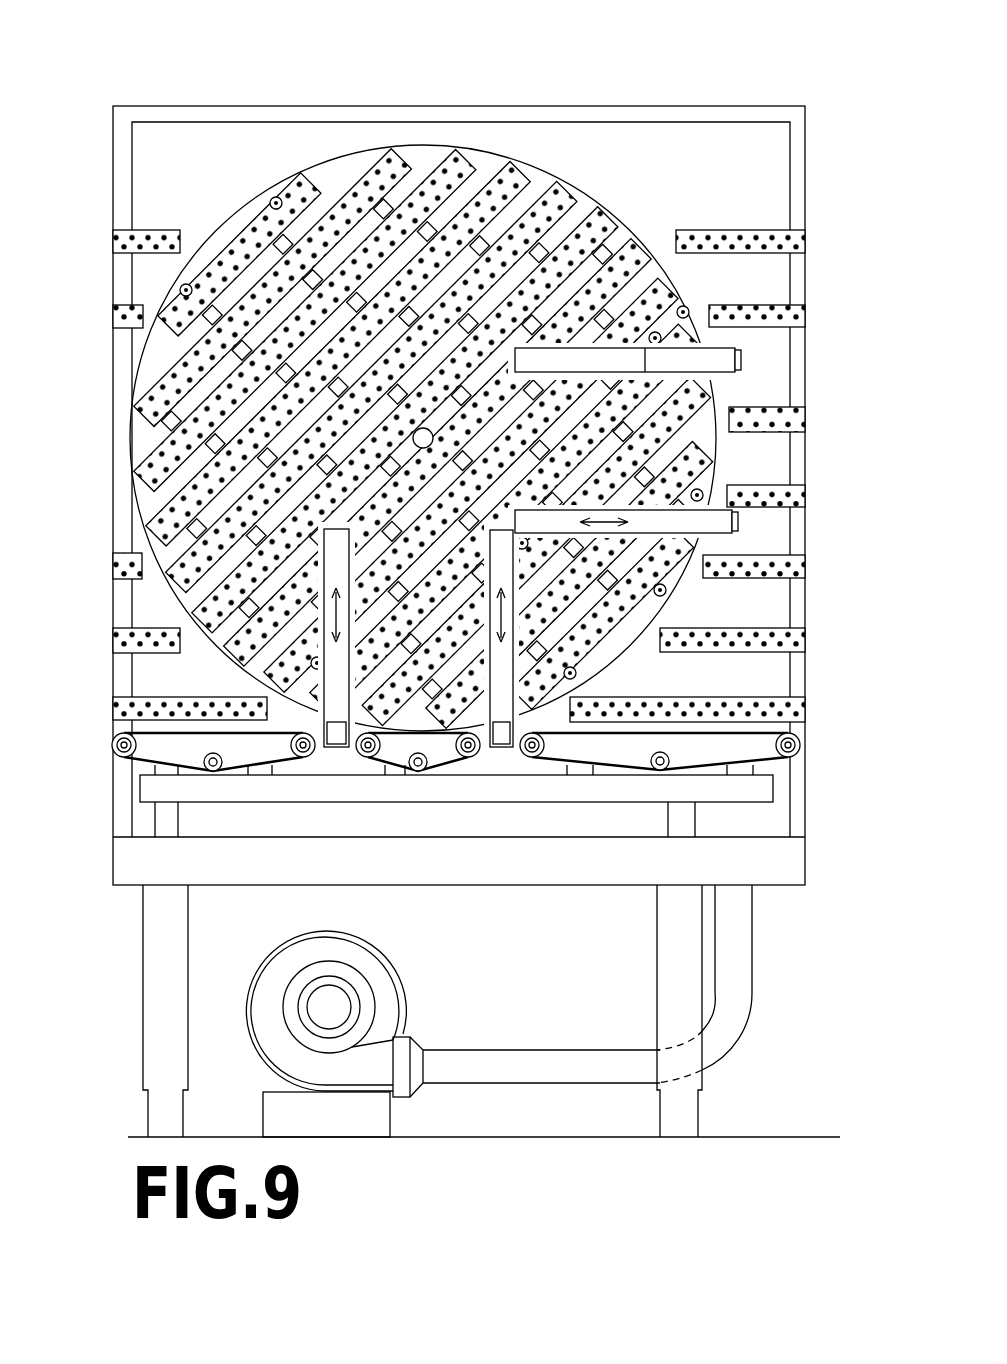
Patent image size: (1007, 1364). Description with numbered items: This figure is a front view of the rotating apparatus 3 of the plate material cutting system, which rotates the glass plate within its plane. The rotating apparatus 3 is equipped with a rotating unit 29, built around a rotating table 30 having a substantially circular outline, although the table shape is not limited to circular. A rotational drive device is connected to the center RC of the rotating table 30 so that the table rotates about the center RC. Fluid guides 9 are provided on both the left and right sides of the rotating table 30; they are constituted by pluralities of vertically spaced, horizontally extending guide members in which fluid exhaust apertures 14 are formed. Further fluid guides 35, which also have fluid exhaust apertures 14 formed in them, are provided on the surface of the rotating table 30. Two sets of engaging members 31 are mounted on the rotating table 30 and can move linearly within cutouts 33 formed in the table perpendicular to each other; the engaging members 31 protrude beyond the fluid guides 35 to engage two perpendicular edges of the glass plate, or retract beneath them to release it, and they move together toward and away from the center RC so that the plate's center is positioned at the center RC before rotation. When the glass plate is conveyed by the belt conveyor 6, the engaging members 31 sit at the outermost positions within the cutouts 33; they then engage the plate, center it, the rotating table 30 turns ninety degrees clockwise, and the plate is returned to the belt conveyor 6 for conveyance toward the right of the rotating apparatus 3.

The rotating apparatus 3 is at (482, 72).
The belt conveyor 6 is at (195, 740).
The fluid guides 9 is at (160, 240).
The fluid exhaust apertures 14 is at (322, 183).
The rotating unit 29 is at (290, 150).
The rotating table 30 is at (372, 160).
The engaging members 31 is at (742, 362).
The cutouts 33 is at (332, 540).
The fluid guides 35 is at (580, 190).
The center of the rotating table RC is at (418, 434).